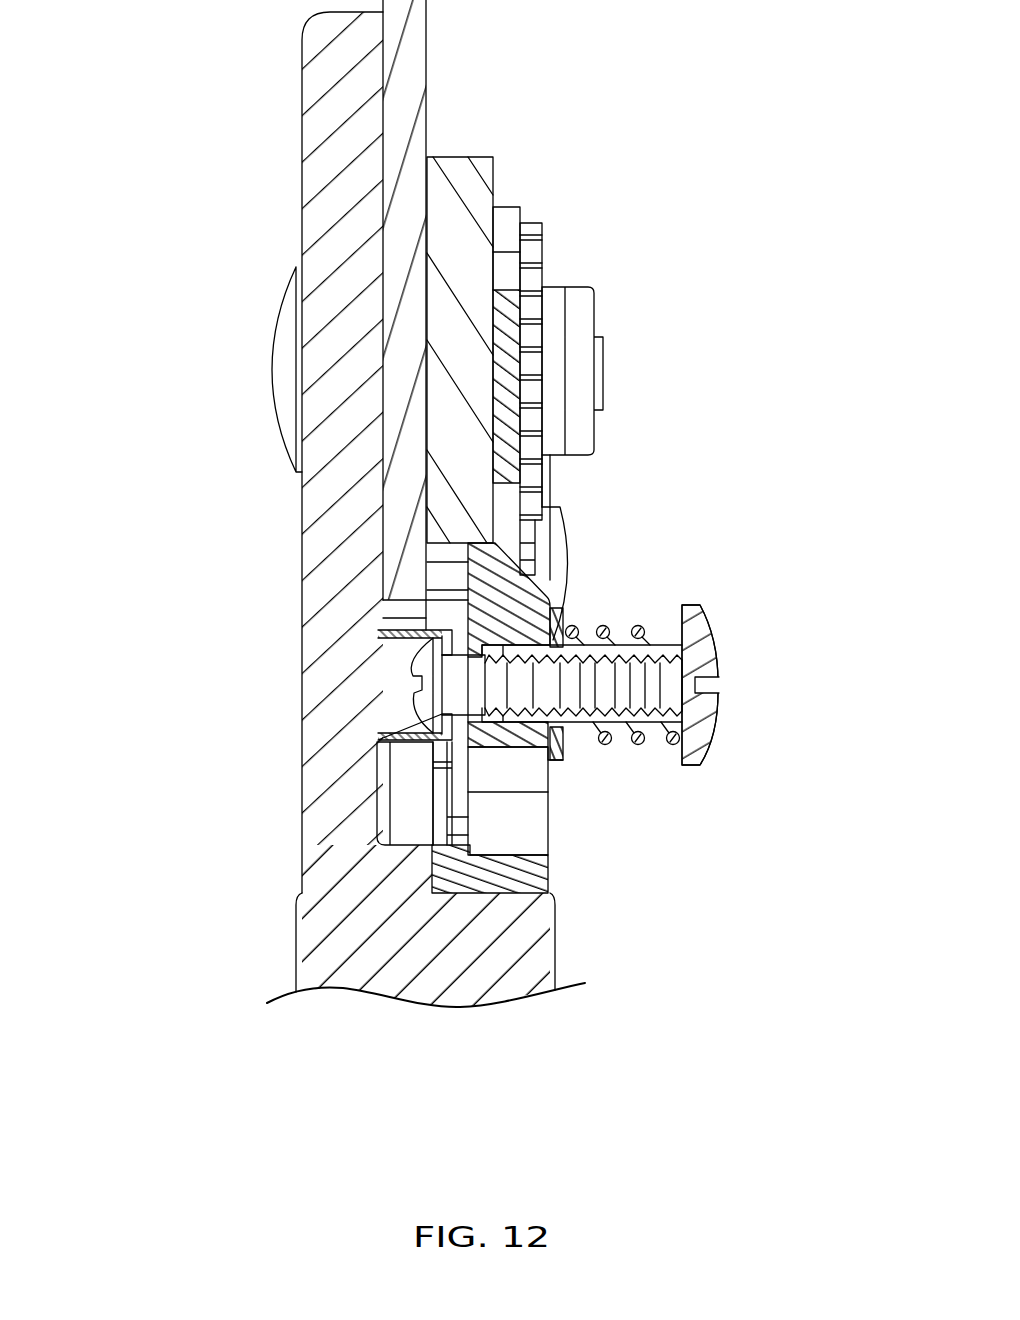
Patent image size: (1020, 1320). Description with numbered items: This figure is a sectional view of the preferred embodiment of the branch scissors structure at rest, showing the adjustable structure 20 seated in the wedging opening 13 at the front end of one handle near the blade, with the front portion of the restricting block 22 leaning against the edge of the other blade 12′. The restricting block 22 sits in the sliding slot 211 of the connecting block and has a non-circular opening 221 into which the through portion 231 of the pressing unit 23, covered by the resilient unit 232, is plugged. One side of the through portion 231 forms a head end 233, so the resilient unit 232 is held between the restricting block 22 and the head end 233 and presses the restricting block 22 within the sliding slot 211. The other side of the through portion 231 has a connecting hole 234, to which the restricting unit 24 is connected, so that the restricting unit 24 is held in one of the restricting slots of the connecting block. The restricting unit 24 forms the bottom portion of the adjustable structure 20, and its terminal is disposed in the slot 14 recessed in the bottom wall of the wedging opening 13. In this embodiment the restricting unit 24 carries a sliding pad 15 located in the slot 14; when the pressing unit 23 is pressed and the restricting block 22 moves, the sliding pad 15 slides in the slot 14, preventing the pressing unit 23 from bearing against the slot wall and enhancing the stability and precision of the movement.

The adjustable structure 20 is at (282, 188).
The blade 12′ is at (482, 502).
The wedging opening 13 is at (480, 893).
The slot 14 is at (393, 795).
The sliding pad 15 is at (380, 635).
The restricting block 22 is at (480, 556).
The non-circular opening 221 is at (560, 615).
The pressing unit 23 is at (688, 760).
The through portion 231 is at (625, 717).
The resilient unit 232 is at (638, 625).
The head end 233 is at (698, 620).
The connecting hole 234 is at (570, 718).
The restricting unit 24 is at (433, 705).
The sliding slot 211 is at (528, 843).